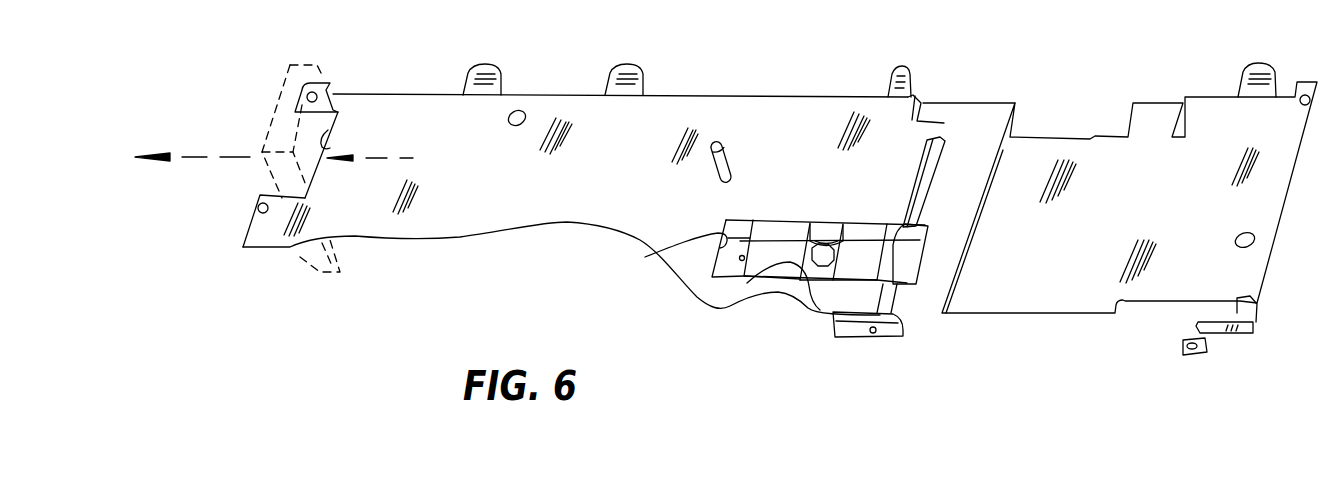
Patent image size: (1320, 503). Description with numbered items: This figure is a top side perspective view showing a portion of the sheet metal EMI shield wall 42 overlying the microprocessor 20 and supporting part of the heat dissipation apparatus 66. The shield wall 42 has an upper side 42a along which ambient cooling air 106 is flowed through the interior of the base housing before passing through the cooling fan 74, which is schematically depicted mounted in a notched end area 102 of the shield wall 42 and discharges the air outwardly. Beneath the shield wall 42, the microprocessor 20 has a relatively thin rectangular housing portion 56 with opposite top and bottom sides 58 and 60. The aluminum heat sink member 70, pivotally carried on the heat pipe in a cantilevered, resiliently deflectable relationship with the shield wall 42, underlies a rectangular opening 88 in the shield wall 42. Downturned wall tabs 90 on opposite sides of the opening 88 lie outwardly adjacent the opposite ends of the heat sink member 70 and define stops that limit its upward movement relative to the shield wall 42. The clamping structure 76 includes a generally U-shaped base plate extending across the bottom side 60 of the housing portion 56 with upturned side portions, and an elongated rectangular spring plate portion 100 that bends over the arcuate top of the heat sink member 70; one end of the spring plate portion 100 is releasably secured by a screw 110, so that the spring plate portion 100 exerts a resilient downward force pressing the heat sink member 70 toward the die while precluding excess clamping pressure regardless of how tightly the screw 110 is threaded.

The microprocessor 20 is at (770, 222).
The sheet metal EMI shield wall 42 is at (673, 97).
The upper side of shield wall 42a is at (606, 171).
The housing portion 56 is at (732, 226).
The top side of housing portion 58 is at (913, 228).
The bottom side of housing portion 60 is at (858, 337).
The heat dissipation apparatus 66 is at (827, 82).
The heat sink member 70 is at (809, 281).
The cooling fan 74 is at (280, 92).
The clamping structure 76 is at (760, 285).
The rectangular opening 88 is at (666, 253).
The downturned wall tabs 90 is at (832, 225).
The spring plate portion 100 is at (748, 302).
The notched end area 102 is at (327, 150).
The ambient cooling air 106 is at (203, 158).
The screw 110 is at (739, 258).